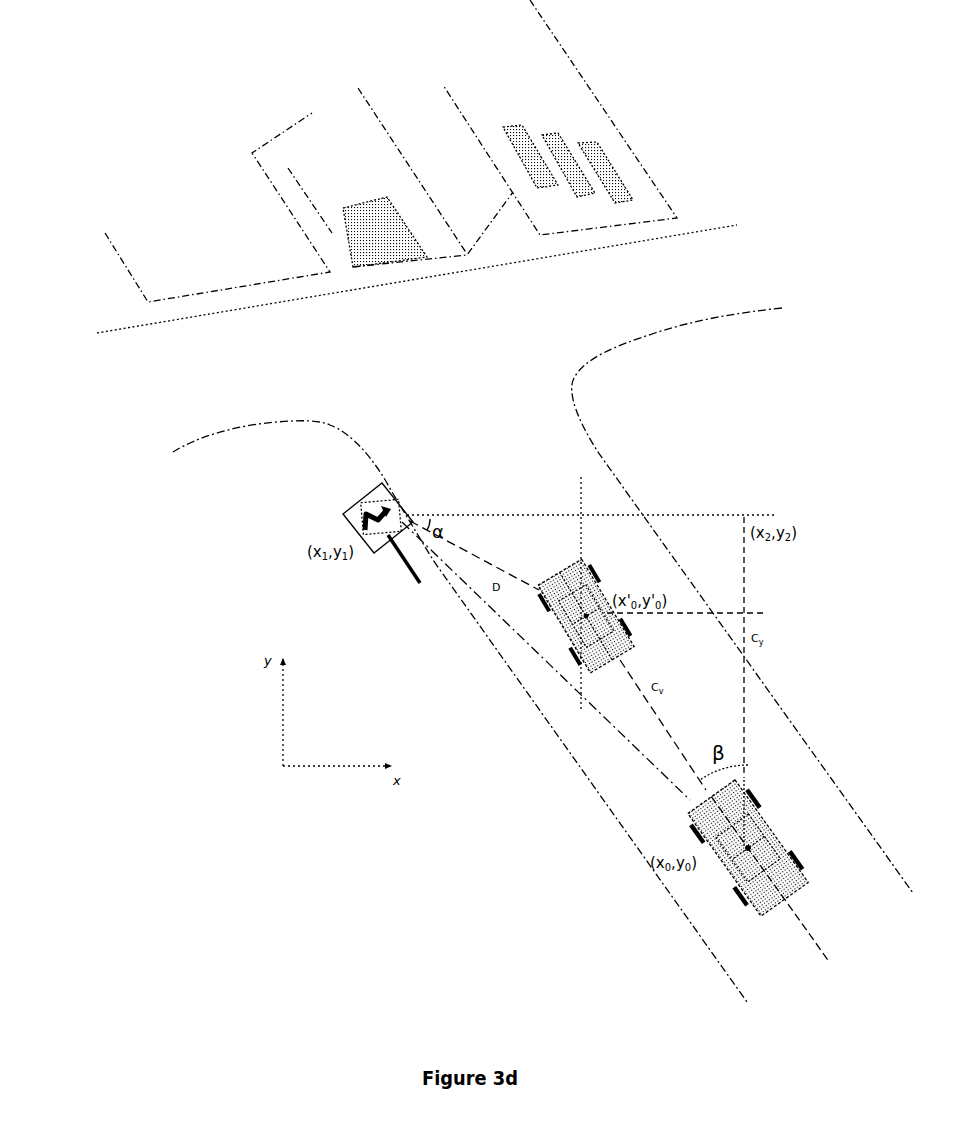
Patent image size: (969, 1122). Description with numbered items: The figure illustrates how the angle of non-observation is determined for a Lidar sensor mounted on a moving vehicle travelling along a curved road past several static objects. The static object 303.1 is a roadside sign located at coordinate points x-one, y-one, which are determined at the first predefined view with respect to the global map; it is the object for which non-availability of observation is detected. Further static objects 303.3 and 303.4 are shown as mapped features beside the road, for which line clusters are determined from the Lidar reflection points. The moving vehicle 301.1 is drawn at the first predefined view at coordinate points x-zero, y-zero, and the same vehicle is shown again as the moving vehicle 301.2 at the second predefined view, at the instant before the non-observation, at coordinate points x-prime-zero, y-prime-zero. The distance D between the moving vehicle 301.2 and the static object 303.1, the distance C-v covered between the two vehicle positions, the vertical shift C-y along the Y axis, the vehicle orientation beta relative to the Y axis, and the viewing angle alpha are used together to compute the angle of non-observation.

The static object 303.1 is at (343, 514).
The static object 303.3 is at (359, 81).
The static object 303.4 is at (106, 246).
The moving vehicle 301.1 is at (756, 918).
The moving vehicle 301.2 is at (609, 586).